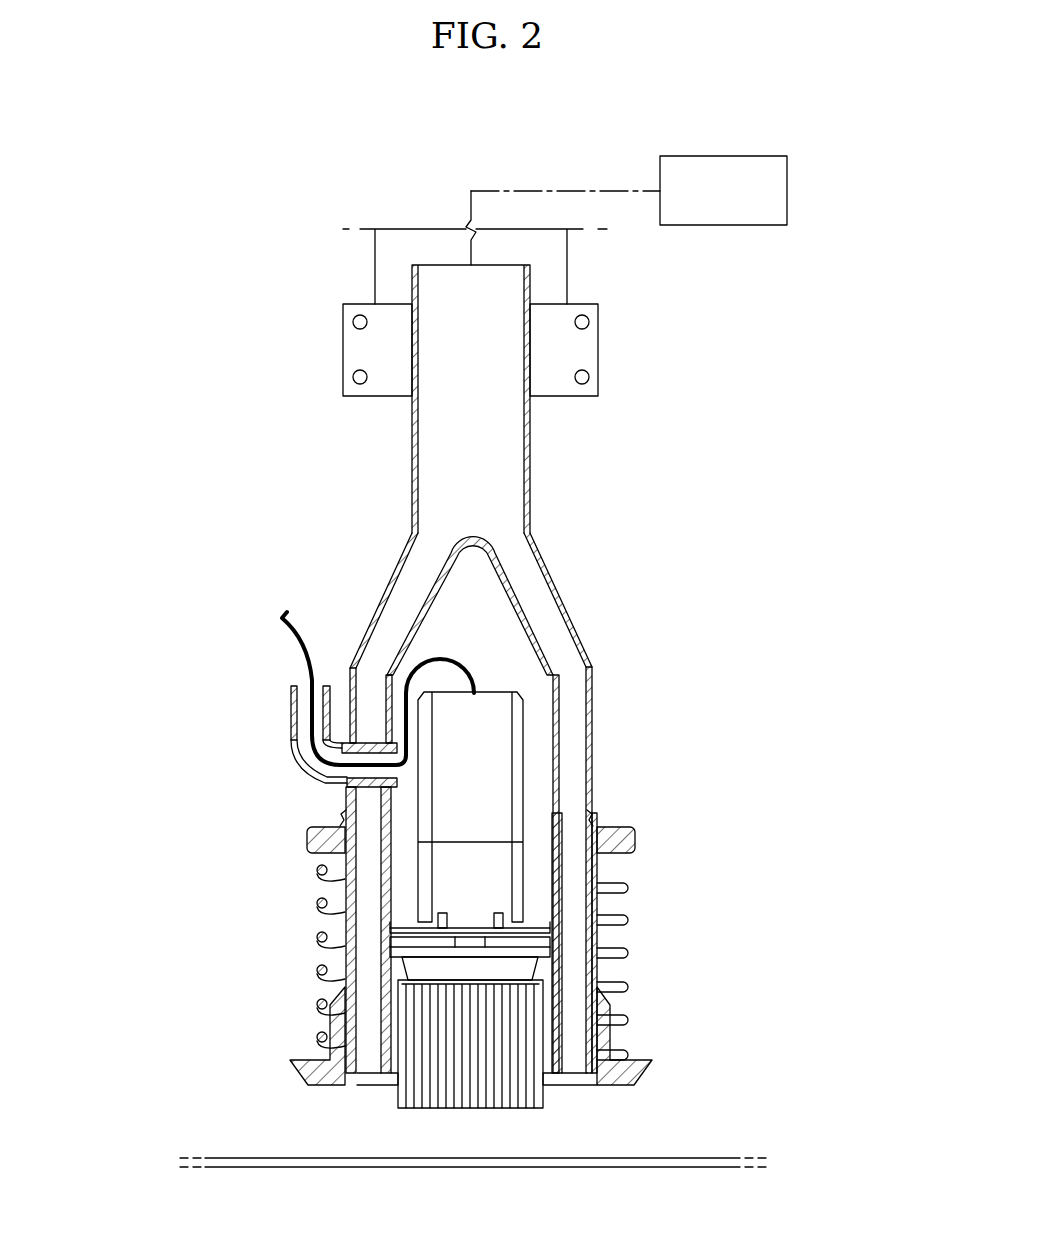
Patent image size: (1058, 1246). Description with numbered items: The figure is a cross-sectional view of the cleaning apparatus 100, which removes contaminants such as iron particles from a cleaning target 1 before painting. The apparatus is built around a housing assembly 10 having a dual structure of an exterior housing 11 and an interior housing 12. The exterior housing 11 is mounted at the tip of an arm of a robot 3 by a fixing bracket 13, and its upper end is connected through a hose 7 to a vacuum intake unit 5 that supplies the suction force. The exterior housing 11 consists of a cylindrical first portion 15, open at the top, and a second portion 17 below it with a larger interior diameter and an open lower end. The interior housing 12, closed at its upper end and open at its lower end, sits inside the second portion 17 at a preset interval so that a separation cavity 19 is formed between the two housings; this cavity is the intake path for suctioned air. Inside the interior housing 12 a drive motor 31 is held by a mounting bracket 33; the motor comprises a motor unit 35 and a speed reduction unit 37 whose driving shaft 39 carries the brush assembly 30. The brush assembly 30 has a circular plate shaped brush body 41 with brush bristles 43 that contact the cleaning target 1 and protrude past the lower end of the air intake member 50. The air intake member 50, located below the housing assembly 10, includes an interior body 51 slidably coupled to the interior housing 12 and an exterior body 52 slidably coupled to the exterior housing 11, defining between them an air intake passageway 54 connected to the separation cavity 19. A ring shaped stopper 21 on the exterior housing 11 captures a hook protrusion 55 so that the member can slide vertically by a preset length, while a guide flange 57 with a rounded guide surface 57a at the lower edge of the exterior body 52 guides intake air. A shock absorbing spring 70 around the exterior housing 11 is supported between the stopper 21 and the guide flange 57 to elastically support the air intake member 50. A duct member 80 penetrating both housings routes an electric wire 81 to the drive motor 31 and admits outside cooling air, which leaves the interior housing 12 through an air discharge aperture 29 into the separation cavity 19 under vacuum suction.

The cleaning target 1 is at (655, 1158).
The robot 3 is at (375, 270).
The vacuum intake unit 5 is at (719, 157).
The hose 7 is at (565, 190).
The housing assembly 10 is at (597, 713).
The exterior housing 11 is at (542, 478).
The interior housing 12 is at (383, 697).
The fixing bracket 13 is at (343, 345).
The first portion 15 is at (528, 490).
The second portion 17 is at (592, 692).
The separation cavity 19 is at (567, 735).
The stopper 21 is at (636, 835).
The air discharge aperture 29 is at (468, 538).
The brush assembly 30 is at (397, 1102).
The drive motor 31 is at (412, 803).
The mounting bracket 33 is at (542, 930).
The motor unit 35 is at (525, 770).
The speed reduction unit 37 is at (415, 880).
The driving shaft 39 is at (470, 942).
The brush body 41 is at (542, 952).
The brush bristles 43 is at (412, 1025).
The air intake member 50 is at (648, 946).
The interior body 51 is at (558, 867).
The exterior body 52 is at (593, 903).
The air intake passageway 54 is at (374, 950).
The hook protrusion 55 is at (340, 813).
The guide flange 57 is at (293, 1072).
The guide surface 57a is at (633, 1082).
The shock absorbing spring 70 is at (316, 869).
The duct member 80 is at (292, 707).
The electric wire 81 is at (302, 643).
The cleaning apparatus 100 is at (258, 230).